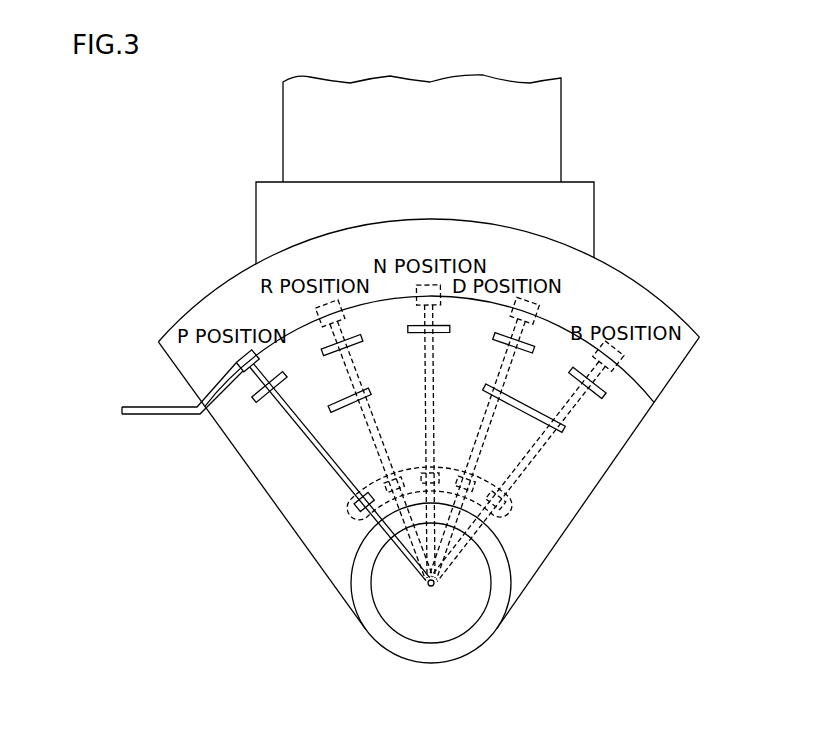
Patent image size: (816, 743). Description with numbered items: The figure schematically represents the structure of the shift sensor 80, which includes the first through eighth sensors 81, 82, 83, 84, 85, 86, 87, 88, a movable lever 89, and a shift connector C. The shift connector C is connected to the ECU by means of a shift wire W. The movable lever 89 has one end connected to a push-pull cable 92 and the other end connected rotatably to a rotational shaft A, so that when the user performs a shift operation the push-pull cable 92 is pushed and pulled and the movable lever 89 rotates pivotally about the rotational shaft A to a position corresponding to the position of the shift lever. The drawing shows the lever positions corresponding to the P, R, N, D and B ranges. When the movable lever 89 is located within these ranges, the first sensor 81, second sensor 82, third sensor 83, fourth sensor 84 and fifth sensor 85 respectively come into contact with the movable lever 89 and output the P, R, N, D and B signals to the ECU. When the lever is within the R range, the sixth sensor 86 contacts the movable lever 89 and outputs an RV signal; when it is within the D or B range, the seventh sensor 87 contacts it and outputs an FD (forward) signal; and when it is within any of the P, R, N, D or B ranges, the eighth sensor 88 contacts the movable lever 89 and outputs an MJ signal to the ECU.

The shift sensor 80 is at (557, 545).
The first sensor 81 is at (265, 402).
The second sensor 82 is at (323, 337).
The third sensor 83 is at (410, 326).
The fourth sensor 84 is at (532, 335).
The fifth sensor 85 is at (588, 401).
The sixth sensor 86 is at (347, 412).
The seventh sensor 87 is at (532, 414).
The eighth sensor 88 is at (520, 497).
The movable lever 89 is at (305, 435).
The push-pull cable 92 is at (139, 418).
The rotational shaft A is at (432, 585).
The shift wire W is at (562, 130).
The shift connector C is at (597, 215).